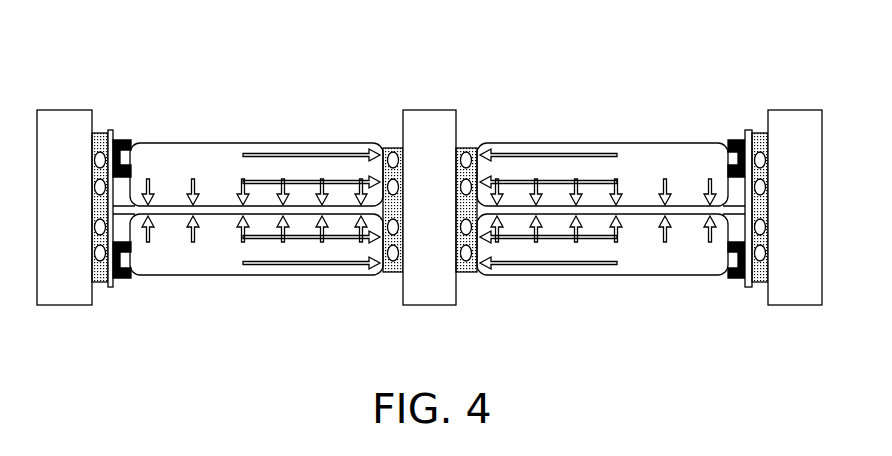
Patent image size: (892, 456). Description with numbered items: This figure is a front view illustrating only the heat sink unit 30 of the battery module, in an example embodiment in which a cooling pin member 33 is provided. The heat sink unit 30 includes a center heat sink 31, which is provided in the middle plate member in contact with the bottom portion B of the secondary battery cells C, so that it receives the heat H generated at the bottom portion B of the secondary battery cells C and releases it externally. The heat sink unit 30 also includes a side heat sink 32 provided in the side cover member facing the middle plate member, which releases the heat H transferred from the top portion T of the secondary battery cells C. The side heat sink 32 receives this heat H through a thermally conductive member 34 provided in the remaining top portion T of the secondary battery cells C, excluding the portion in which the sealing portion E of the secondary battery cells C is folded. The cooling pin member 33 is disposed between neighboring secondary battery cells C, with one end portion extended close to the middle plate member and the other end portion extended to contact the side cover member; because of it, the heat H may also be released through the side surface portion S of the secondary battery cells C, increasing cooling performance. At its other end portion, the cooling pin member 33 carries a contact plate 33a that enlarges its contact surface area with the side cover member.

The heat sink unit 30 is at (365, 72).
The center heat sink 31 is at (415, 118).
The side heat sink 32 is at (68, 118).
The cooling pin member 33 is at (218, 203).
The contact plate 33a is at (112, 188).
The thermally conductive member 34 is at (110, 136).
The heat H is at (193, 224).
The bottom portion B is at (490, 244).
The side surface portion S is at (583, 278).
The secondary battery cells C is at (655, 240).
The top portion T is at (725, 233).
The sealing portion E is at (738, 275).